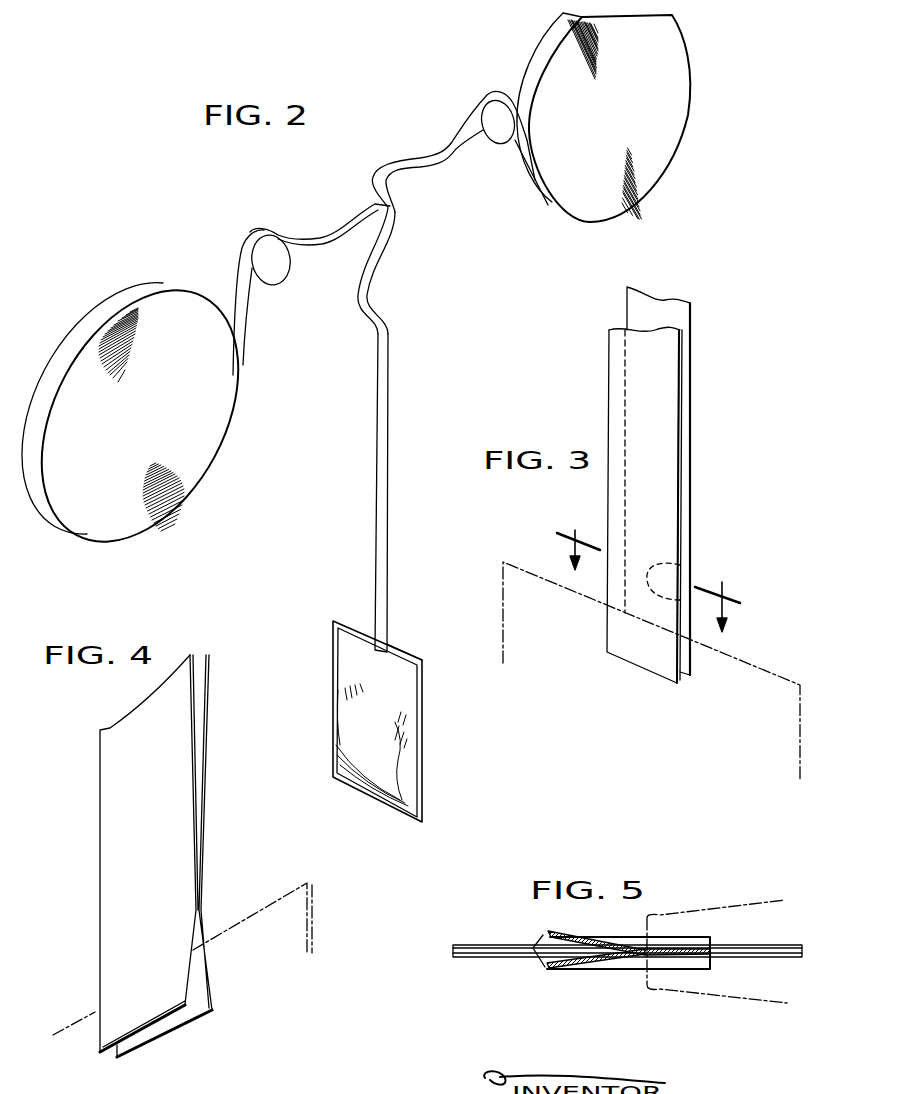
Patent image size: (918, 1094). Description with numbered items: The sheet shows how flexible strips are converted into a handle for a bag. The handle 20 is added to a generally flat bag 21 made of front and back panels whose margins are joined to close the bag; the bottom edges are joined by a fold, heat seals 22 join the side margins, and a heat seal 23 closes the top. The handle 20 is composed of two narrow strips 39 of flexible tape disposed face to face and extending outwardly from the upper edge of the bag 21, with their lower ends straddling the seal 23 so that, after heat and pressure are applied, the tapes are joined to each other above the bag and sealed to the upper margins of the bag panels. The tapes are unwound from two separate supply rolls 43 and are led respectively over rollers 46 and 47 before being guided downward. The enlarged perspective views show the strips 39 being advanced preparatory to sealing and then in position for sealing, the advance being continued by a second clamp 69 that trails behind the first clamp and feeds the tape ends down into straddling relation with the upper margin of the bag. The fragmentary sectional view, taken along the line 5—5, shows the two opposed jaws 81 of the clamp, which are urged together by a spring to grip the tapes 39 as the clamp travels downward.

In FIG. 2, the handle 20 is at (388, 520).
In FIG. 3, the handle 20 is at (697, 423).
In FIG. 2, the bag 21 is at (412, 692).
In FIG. 3, the bag 21 is at (530, 574).
In FIG. 4, the bag 21 is at (317, 910).
In FIG. 5, the bag 21 is at (497, 942).
In FIG. 2, the heat seals 22 is at (333, 666).
In FIG. 2, the heat seal 23 is at (407, 655).
In FIG. 2, the strips of flexible tape 39 is at (377, 200).
In FIG. 3, the strips of flexible tape 39 is at (625, 335).
In FIG. 4, the strips of flexible tape 39 is at (190, 695).
In FIG. 5, the strips of flexible tape 39 is at (537, 935).
In FIG. 2, the supply rolls 43 is at (533, 60).
In FIG. 2, the roller 46 is at (280, 272).
In FIG. 2, the roller 47 is at (498, 145).
In FIG. 3, the second clamp 69 is at (657, 558).
In FIG. 5, the second clamp 69 is at (732, 900).
In FIG. 5, the jaws 81 is at (707, 907).
In FIG. 3, the section line 5— 5 is at (648, 570).